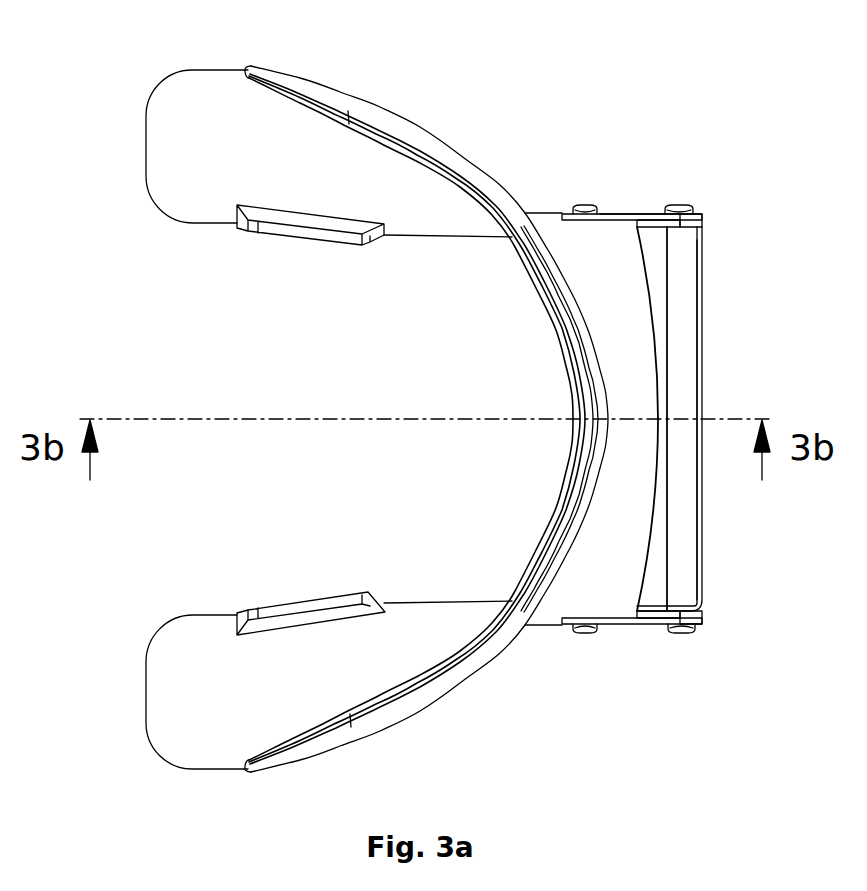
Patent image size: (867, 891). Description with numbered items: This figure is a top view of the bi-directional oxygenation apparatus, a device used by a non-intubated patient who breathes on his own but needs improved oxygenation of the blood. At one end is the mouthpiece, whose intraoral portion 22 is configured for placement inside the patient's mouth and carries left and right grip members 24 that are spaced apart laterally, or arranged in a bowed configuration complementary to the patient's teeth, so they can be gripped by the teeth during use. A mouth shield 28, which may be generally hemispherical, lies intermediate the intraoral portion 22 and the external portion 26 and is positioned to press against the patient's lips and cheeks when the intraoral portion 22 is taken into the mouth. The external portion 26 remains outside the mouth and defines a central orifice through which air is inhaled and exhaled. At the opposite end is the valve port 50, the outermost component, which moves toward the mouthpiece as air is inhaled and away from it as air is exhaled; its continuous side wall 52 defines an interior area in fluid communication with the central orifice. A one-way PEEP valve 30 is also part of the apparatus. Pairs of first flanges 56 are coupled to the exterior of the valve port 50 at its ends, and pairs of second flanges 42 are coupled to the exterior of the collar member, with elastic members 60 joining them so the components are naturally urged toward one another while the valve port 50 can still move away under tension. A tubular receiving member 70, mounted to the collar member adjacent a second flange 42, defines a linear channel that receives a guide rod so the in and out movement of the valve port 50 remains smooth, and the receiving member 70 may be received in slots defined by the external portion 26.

The intraoral portion 22 is at (440, 421).
The grip members 24 is at (193, 95).
The external portion 26 is at (633, 494).
The mouth shield 28 is at (443, 688).
The one-way PEEP valve 30 is at (652, 580).
The second flange 42 is at (583, 205).
The valve port 50 is at (663, 413).
The continuous side wall 52 is at (683, 372).
The first flange 56 is at (678, 205).
The elastic member 60 is at (702, 214).
The receiving member 70 is at (628, 214).